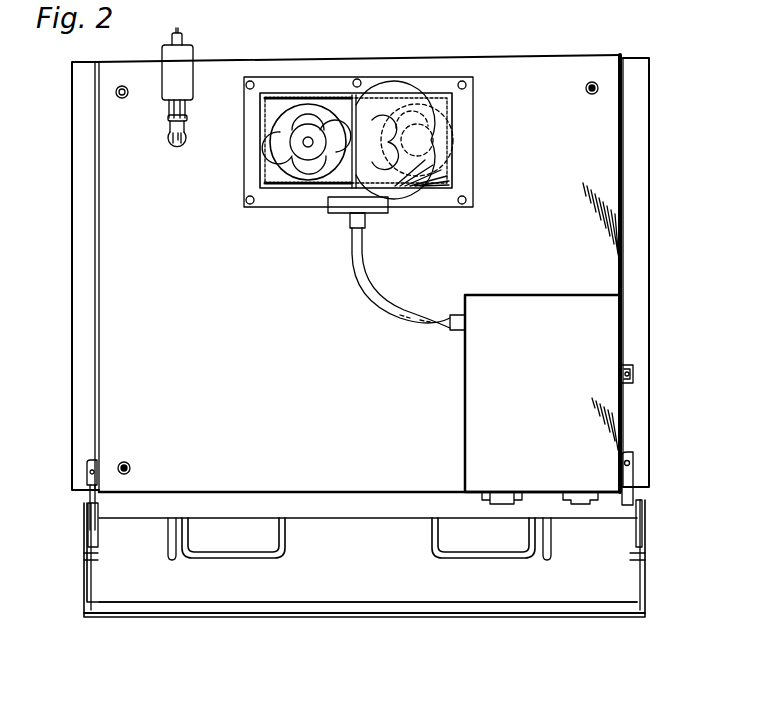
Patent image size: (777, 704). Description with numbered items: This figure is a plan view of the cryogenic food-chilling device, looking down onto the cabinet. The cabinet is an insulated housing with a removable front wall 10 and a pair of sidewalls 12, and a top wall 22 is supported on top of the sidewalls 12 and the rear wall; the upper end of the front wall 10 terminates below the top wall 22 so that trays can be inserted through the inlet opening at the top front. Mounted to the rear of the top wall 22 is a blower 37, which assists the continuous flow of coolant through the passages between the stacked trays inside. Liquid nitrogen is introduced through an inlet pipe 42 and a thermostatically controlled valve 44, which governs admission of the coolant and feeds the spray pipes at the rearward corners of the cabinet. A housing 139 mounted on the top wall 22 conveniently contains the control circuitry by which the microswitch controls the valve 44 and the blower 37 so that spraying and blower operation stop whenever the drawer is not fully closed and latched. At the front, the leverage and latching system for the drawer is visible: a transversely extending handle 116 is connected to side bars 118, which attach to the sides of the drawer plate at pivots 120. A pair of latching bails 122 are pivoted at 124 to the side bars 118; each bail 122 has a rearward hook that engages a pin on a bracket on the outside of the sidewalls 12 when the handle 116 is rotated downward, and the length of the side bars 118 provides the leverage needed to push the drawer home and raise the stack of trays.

The removable front wall 10 is at (370, 522).
The sidewalls 12 is at (70, 305).
The top wall 22 is at (250, 347).
The blower 37 is at (292, 197).
The inlet pipe 42 is at (171, 136).
The thermostatically controlled valve 44 is at (190, 55).
The handle 116 is at (376, 606).
The side bars 118 is at (86, 580).
The pivots 120 is at (82, 510).
The latching bails 122 is at (86, 531).
The bail pivots 124 is at (84, 560).
The housing 139 is at (605, 340).